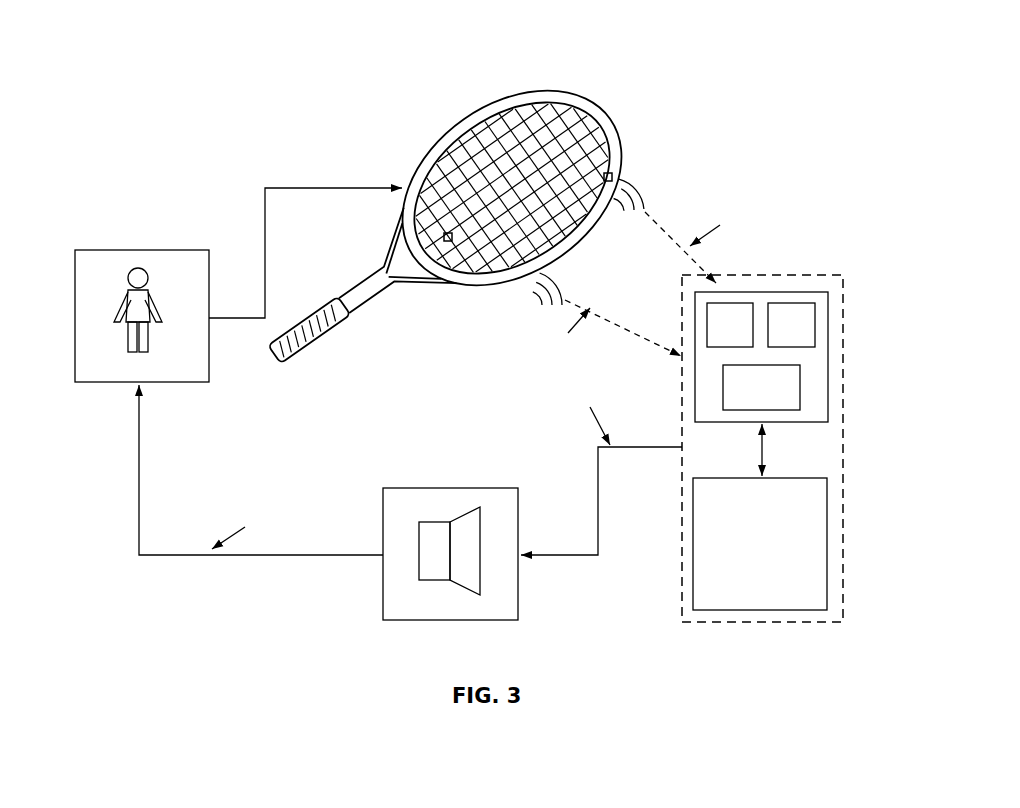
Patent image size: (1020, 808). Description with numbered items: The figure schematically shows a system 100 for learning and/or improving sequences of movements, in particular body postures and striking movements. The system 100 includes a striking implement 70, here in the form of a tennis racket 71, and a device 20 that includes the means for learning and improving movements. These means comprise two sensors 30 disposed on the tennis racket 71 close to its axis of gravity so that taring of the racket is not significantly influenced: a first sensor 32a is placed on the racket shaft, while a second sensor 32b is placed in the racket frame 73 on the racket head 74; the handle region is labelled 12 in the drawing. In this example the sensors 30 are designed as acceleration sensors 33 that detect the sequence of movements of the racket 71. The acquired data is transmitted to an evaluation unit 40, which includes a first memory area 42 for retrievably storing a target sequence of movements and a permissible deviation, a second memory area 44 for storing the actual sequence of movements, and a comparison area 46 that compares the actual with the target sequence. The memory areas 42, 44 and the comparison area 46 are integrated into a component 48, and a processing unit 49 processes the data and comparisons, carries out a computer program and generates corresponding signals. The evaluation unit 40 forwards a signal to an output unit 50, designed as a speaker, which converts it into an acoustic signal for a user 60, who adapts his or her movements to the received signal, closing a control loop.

The handle 12 is at (353, 293).
The device 20 is at (545, 231).
The sensors 30 is at (654, 170).
The first sensor 32a is at (624, 192).
The second sensor 32b is at (450, 242).
The acceleration sensors 33 is at (612, 177).
The evaluation unit 40 is at (815, 272).
The first memory area 42 is at (720, 318).
The second memory area 44 is at (793, 333).
The comparison area 46 is at (778, 385).
The component 48 is at (803, 428).
The processing unit 49 is at (803, 518).
The output unit 50 is at (432, 486).
The user 60 is at (88, 247).
The striking implement 70 is at (512, 187).
The tennis racket 71 is at (512, 187).
The racket frame 73 is at (512, 187).
The racket head 74 is at (422, 107).
The system 100 is at (733, 127).